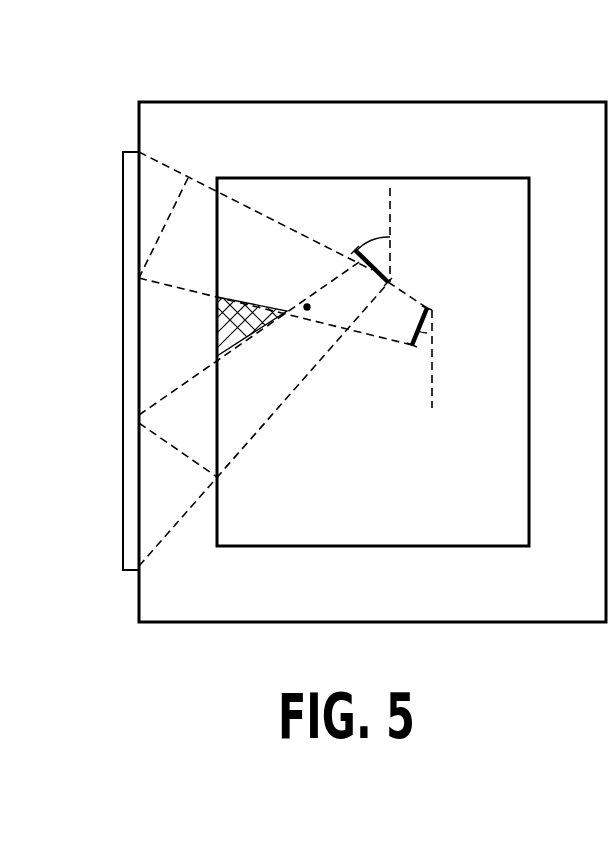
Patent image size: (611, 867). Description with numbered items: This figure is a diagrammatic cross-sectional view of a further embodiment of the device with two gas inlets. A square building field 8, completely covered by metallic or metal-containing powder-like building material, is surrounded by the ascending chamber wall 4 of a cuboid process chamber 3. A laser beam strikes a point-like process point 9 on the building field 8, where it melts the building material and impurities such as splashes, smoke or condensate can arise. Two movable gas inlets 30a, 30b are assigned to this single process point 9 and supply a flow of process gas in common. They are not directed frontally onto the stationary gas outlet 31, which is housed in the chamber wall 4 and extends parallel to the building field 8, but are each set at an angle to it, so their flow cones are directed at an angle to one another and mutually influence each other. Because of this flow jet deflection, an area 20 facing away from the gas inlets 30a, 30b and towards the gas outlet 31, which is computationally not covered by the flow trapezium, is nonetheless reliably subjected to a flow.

The process chamber 3 is at (541, 150).
The chamber wall 4 is at (558, 101).
The building field 8 is at (481, 200).
The process point 9 is at (309, 312).
The area 20 is at (217, 331).
The gas inlet 30a is at (355, 250).
The gas inlet 30b is at (412, 349).
The gas outlet 31 is at (132, 151).